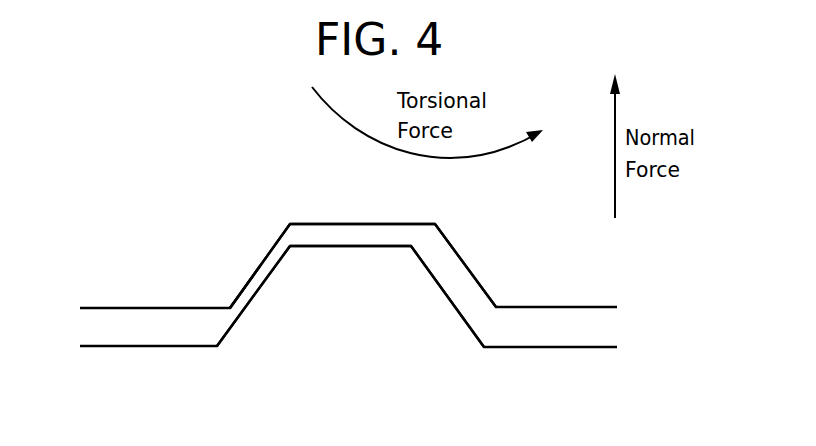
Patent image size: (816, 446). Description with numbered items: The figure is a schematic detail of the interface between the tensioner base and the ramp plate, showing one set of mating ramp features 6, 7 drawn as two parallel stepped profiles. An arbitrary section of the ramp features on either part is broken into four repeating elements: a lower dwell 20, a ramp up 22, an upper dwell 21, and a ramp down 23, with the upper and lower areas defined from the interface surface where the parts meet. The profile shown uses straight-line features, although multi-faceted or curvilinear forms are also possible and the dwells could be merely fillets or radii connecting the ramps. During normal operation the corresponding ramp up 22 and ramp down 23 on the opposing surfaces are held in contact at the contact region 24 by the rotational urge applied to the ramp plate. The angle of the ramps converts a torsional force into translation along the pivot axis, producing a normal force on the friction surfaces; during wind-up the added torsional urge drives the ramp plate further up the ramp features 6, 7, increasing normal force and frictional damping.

The ramp feature 6 is at (378, 288).
The ramp feature 7 is at (321, 219).
The lower dwell 20 is at (155, 347).
The upper dwell 21 is at (155, 307).
The ramp up 22 is at (244, 309).
The ramp down 23 is at (255, 270).
The contact region 24 is at (252, 297).